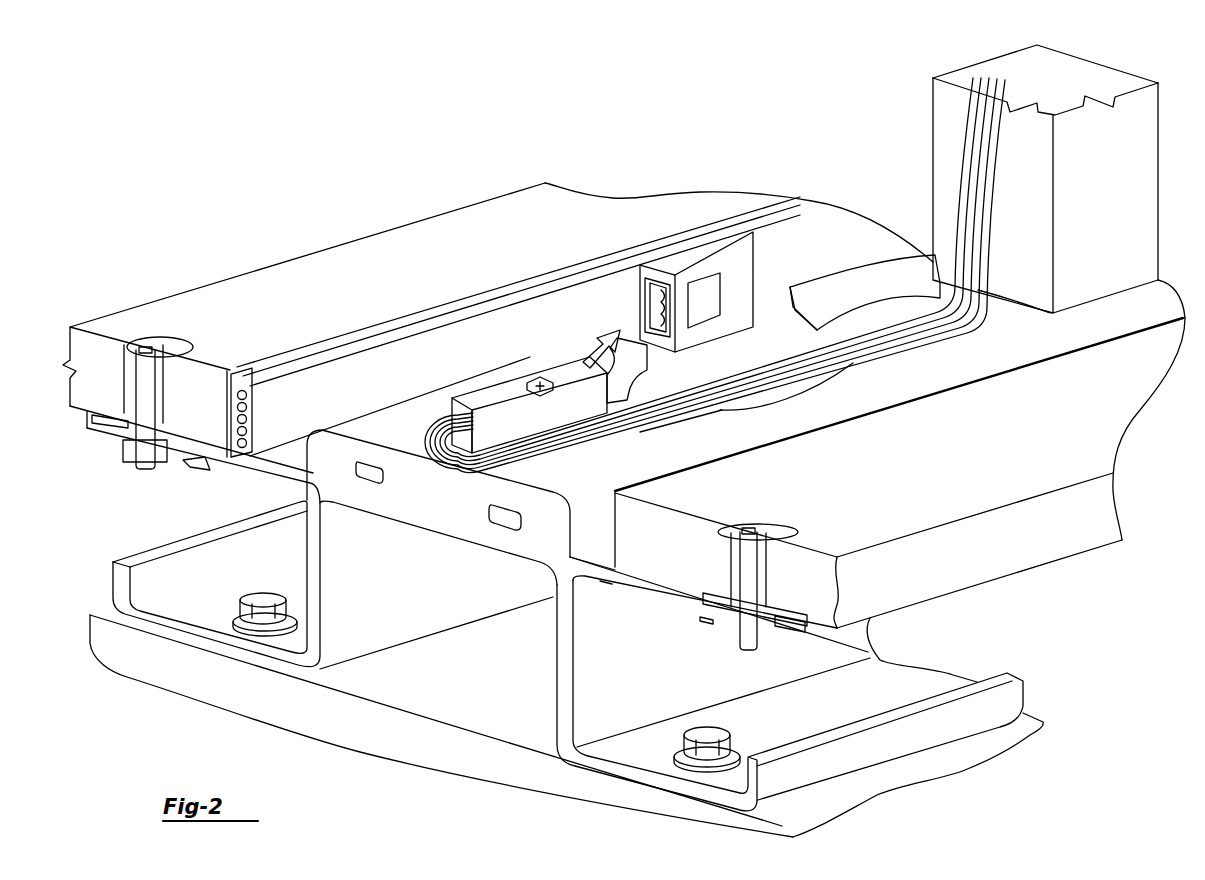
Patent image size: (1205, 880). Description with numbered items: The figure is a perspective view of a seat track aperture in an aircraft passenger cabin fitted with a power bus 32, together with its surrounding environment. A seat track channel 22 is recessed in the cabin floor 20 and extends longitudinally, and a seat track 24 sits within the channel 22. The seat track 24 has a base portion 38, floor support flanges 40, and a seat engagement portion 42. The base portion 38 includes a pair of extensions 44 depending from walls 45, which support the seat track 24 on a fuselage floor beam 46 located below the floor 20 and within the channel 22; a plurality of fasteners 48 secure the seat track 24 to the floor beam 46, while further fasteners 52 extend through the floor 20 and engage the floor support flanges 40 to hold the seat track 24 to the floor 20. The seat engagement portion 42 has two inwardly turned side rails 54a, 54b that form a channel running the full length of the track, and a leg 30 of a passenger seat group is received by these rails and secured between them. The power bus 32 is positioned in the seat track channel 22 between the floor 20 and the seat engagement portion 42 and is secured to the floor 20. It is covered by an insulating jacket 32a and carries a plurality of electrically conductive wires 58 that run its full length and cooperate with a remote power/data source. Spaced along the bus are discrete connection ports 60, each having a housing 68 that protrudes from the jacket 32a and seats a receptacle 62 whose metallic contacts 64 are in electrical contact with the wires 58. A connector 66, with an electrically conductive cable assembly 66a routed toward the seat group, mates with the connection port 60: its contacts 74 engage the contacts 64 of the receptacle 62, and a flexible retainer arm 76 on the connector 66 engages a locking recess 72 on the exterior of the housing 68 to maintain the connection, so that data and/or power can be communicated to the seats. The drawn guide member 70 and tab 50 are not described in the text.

The floor 20 is at (267, 267).
The seat track channel 22 is at (287, 458).
The seat track 24 is at (555, 673).
The leg 30 is at (938, 138).
The power bus 32 is at (350, 357).
The insulating jacket 32a is at (245, 458).
The base portion 38 is at (270, 580).
The floor support flanges 40 is at (213, 459).
The seat engagement portion 42 is at (423, 530).
The extensions 44 is at (187, 646).
The walls 45 is at (367, 637).
The fuselage floor beam 46 is at (297, 723).
The fasteners 48 is at (240, 604).
The retaining tab 50 is at (230, 468).
The fasteners 52 is at (145, 348).
The side rail 54a is at (380, 483).
The side rail 54b is at (495, 507).
The electrically conductive wires 58 is at (236, 410).
The connection port 60 is at (689, 255).
The receptacle 62 is at (640, 284).
The metallic contacts 64 is at (655, 302).
The connector 66 is at (481, 394).
The electrically conductive cable assembly 66a is at (953, 322).
The housing 68 is at (750, 290).
The guide rail 70 is at (543, 303).
The locking recess 72 is at (720, 280).
The contacts 74 is at (528, 375).
The flexible retainer arm 76 is at (607, 412).